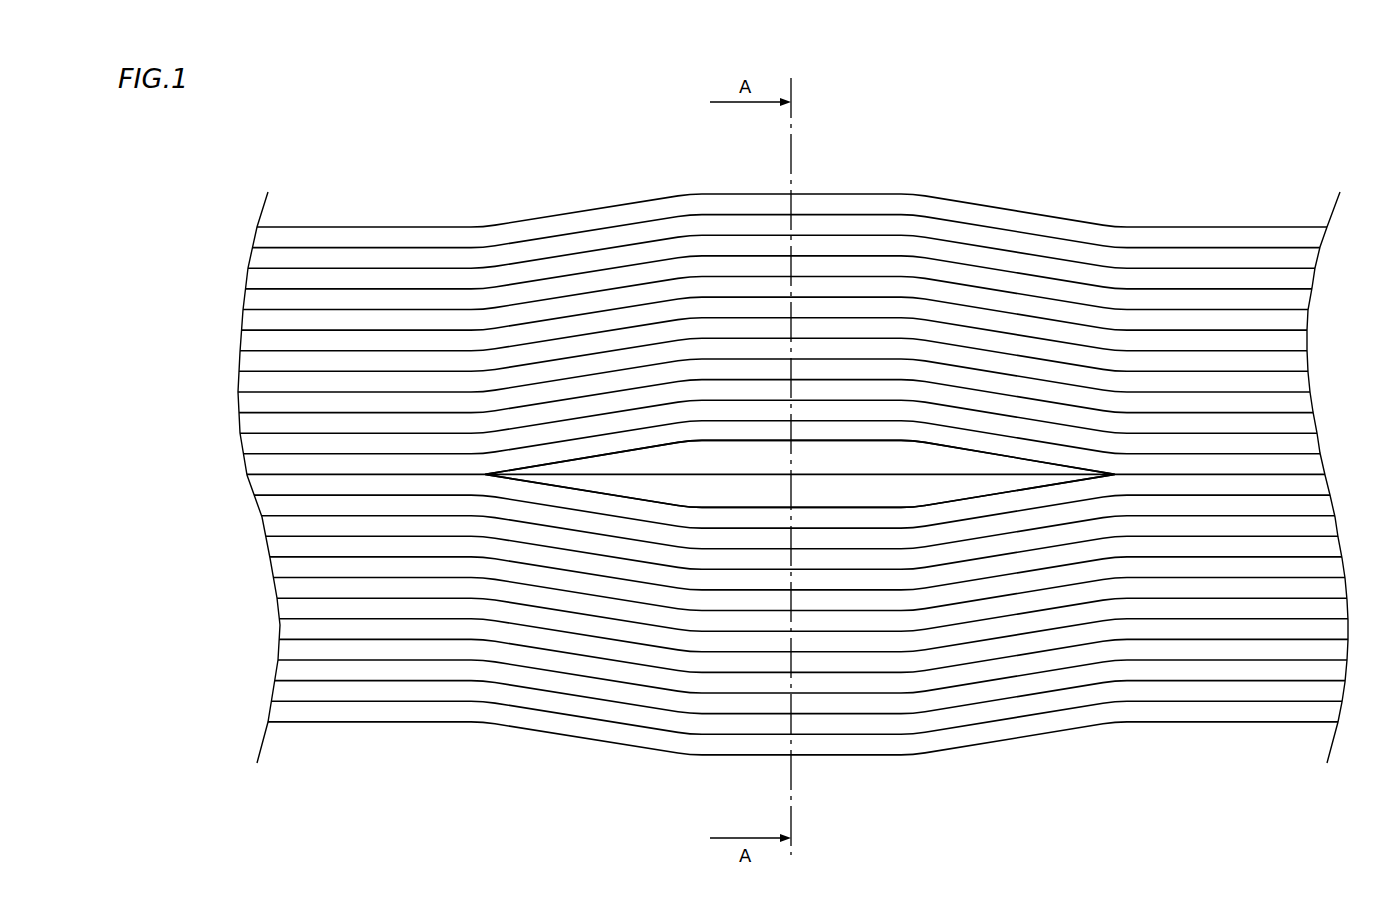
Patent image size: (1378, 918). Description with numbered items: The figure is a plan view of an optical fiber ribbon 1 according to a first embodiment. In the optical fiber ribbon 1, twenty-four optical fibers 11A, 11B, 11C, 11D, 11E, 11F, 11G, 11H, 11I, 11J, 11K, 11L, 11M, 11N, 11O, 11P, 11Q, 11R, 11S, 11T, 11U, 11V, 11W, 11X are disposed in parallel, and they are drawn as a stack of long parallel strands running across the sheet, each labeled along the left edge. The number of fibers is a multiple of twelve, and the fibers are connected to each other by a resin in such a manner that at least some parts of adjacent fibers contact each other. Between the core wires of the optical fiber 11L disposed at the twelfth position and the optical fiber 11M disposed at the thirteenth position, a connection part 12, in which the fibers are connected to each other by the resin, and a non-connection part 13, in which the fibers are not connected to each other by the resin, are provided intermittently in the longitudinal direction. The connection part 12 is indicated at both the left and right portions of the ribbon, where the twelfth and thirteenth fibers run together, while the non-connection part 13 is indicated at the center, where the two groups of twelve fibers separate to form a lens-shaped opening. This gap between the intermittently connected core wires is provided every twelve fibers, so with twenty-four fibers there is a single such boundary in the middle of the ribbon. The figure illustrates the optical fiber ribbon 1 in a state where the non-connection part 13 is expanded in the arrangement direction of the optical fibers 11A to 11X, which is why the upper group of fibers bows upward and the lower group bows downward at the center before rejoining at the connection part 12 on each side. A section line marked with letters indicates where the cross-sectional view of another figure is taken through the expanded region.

The optical fiber ribbon 1 is at (1030, 150).
The optical fiber 11A is at (259, 234).
The optical fiber 11B is at (255, 255).
The optical fiber 11C is at (251, 275).
The optical fiber 11D is at (249, 296).
The optical fiber 11E is at (247, 316).
The optical fiber 11F is at (245, 337).
The optical fiber 11G is at (244, 358).
The optical fiber 11H is at (243, 378).
The optical fiber 11I is at (242, 399).
The optical fiber 11J is at (243, 420).
The optical fiber 11K is at (245, 440).
The optical fiber 11L is at (249, 461).
The optical fiber 11M is at (253, 481).
The optical fiber 11N is at (261, 502).
The optical fiber 11O is at (267, 523).
The optical fiber 11P is at (271, 543).
The optical fiber 11Q is at (275, 564).
The optical fiber 11R is at (279, 584).
The optical fiber 11S is at (282, 605).
The optical fiber 11T is at (284, 626).
The optical fiber 11U is at (283, 646).
The optical fiber 11V is at (281, 667).
The optical fiber 11W is at (278, 688).
The optical fiber 11X is at (274, 708).
The connection part 12 is at (380, 458).
The non-connection part 13 is at (700, 485).